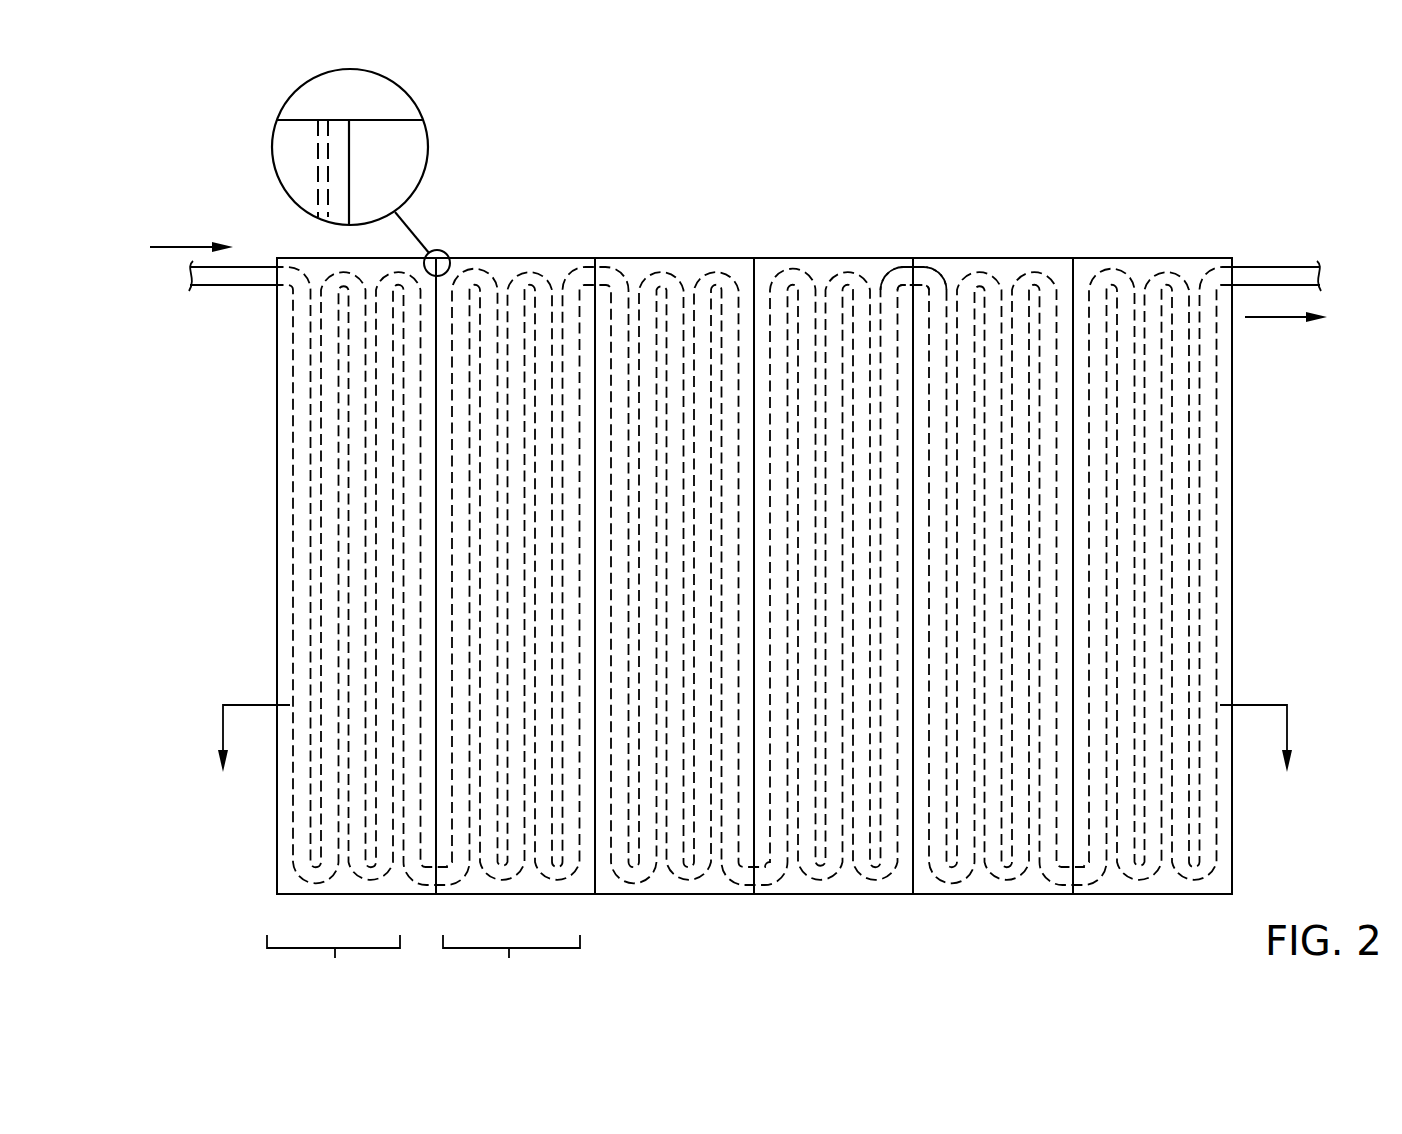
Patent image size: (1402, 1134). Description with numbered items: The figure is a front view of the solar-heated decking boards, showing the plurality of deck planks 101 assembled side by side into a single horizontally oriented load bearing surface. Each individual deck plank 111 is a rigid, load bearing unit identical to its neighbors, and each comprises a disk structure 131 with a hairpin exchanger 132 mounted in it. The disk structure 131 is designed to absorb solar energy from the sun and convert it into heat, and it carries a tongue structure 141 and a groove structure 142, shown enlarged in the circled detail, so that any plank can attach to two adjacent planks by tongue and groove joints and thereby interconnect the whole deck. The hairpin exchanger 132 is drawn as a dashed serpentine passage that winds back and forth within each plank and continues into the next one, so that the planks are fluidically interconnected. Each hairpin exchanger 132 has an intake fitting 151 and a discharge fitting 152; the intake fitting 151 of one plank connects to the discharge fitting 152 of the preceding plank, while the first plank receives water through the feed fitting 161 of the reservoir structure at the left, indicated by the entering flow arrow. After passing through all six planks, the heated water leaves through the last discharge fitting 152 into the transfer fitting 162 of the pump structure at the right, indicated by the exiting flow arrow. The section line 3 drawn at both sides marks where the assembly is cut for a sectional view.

The plurality of deck planks 101 is at (1207, 152).
The individual deck plank 111 is at (423, 963).
The disk structure 131 is at (345, 883).
The hairpin exchanger 132 is at (314, 872).
The tongue structure 141 is at (338, 165).
The groove structure 142 is at (318, 166).
The intake fitting 151 is at (937, 277).
The discharge fitting 152 is at (902, 278).
The feed fitting 161 is at (213, 282).
The transfer fitting 162 is at (1285, 278).
The section line FIG. 3 is at (757, 767).